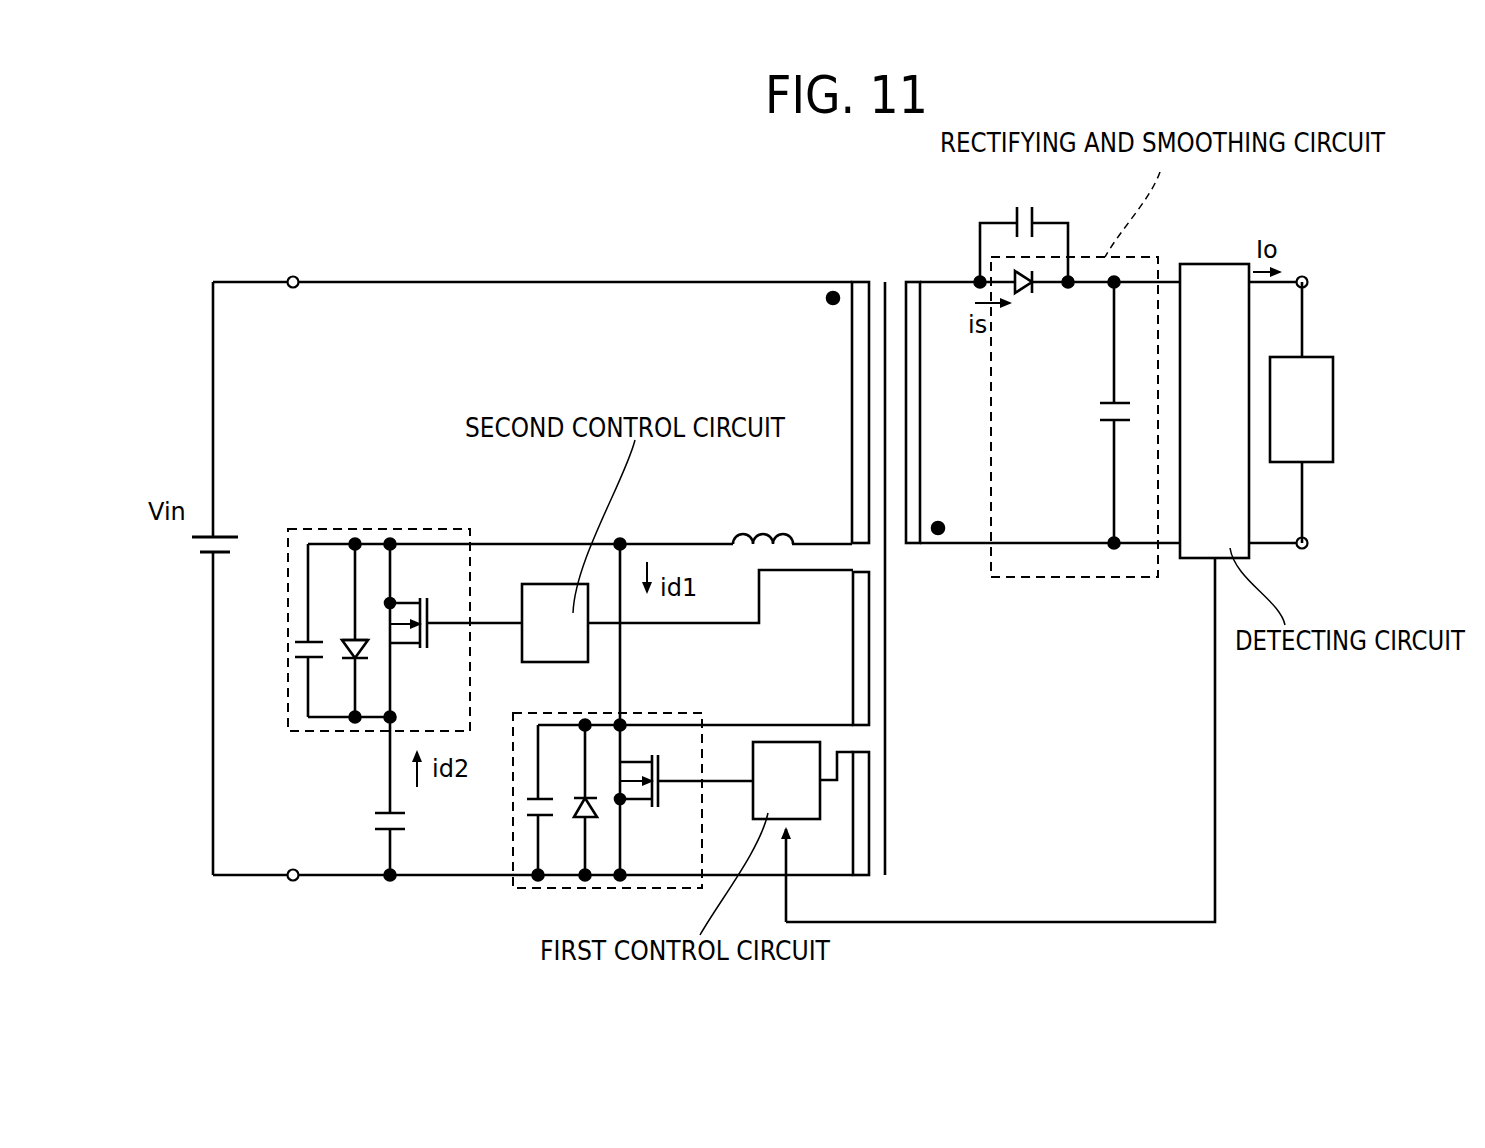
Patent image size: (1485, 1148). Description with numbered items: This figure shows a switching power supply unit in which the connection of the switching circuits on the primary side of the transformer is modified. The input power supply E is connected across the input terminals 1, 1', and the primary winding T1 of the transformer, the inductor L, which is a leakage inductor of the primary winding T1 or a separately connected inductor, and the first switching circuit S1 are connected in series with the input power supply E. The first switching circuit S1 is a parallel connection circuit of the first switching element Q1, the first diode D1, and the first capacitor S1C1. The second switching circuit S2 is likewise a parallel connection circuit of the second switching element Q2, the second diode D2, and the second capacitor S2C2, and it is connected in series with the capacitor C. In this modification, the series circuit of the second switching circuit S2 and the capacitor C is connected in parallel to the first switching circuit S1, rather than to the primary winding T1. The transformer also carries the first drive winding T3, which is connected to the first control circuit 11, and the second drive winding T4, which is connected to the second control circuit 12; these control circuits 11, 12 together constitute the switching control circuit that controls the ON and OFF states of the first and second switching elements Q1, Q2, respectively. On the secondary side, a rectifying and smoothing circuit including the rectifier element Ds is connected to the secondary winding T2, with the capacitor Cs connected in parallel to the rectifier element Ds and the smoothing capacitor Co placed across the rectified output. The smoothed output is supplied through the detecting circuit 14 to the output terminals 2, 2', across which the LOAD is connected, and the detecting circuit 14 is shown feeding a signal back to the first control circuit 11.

The input terminal 1 is at (293, 268).
The input terminal 1' is at (294, 890).
The output terminal 2 is at (1301, 266).
The output terminal 2' is at (1306, 560).
The first control circuit 11 is at (820, 742).
The second control circuit 12 is at (552, 584).
The detecting circuit 14 is at (1215, 264).
The input power supply E is at (175, 550).
The first switching circuit S1 is at (700, 713).
The second switching circuit S2 is at (470, 528).
The first capacitor S1C1 is at (557, 787).
The second capacitor S2C2 is at (332, 630).
The first switching element Q1 is at (684, 800).
The second switching element Q2 is at (454, 631).
The first diode D1 is at (598, 800).
The second diode D2 is at (366, 631).
The capacitor C is at (374, 799).
The inductor L is at (736, 521).
The primary winding T1 is at (843, 412).
The secondary winding T2 is at (931, 412).
The first drive winding T3 is at (843, 813).
The second drive winding T4 is at (843, 648).
The capacitor Cs is at (1024, 231).
The rectifier element Ds is at (1037, 300).
The smoothing capacitor Co is at (1099, 412).
The load LOAD is at (1320, 375).